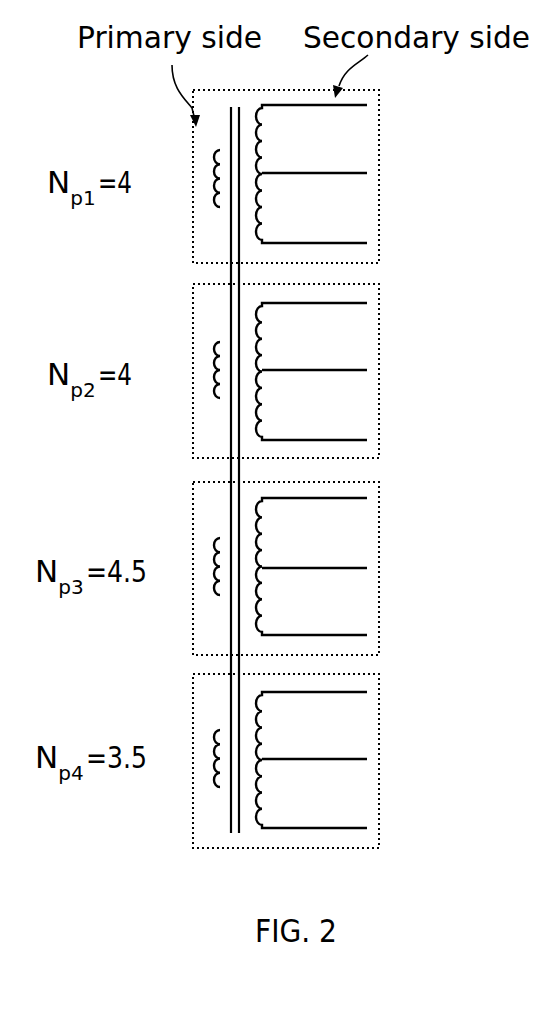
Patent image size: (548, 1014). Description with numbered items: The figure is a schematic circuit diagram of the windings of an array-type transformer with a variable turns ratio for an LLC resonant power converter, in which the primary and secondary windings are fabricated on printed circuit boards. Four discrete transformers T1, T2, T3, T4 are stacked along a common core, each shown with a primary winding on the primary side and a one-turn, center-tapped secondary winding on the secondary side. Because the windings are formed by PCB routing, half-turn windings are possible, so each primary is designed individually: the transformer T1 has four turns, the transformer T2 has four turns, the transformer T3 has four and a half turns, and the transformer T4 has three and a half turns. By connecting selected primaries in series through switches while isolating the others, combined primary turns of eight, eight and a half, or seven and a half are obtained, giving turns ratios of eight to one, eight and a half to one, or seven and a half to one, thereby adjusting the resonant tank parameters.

The discrete transformer T1 is at (392, 142).
The discrete transformer T2 is at (392, 327).
The discrete transformer T3 is at (392, 535).
The discrete transformer T4 is at (392, 720).